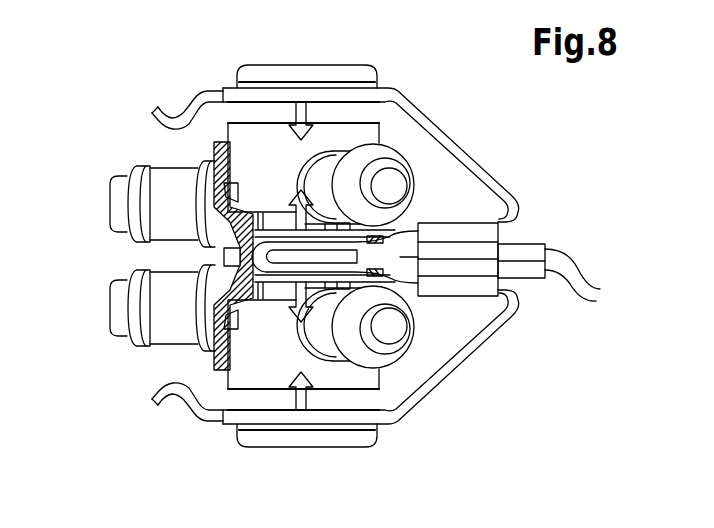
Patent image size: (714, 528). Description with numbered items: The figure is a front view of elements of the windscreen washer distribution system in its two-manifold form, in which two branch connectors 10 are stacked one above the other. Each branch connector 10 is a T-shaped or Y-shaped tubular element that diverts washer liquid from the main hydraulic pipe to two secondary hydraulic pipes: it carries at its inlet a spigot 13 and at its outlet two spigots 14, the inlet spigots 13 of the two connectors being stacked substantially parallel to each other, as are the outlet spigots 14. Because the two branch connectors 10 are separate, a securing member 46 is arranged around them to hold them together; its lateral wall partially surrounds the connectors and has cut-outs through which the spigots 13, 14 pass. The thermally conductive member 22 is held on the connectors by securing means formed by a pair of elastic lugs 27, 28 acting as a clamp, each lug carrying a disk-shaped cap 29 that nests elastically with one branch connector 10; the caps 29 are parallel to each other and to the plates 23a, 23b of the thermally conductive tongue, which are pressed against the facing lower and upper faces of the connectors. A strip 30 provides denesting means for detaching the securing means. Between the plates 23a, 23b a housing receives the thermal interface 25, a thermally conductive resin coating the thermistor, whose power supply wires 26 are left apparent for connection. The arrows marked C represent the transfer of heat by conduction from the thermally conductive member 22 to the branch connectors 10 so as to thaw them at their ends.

The branch connector 10 is at (362, 113).
The inlet spigot 13 is at (112, 204).
The outlet spigot 14 is at (392, 160).
The thermally conductive member 22 is at (334, 270).
The plate 23a is at (372, 194).
The plate 23b is at (396, 318).
The thermal interface 25 is at (421, 247).
The power supply wires 26 is at (561, 274).
The elastic lug 27 is at (473, 163).
The elastic lug 28 is at (497, 333).
The cap 29 is at (290, 77).
The strip 30 is at (153, 101).
The securing member 46 is at (213, 162).